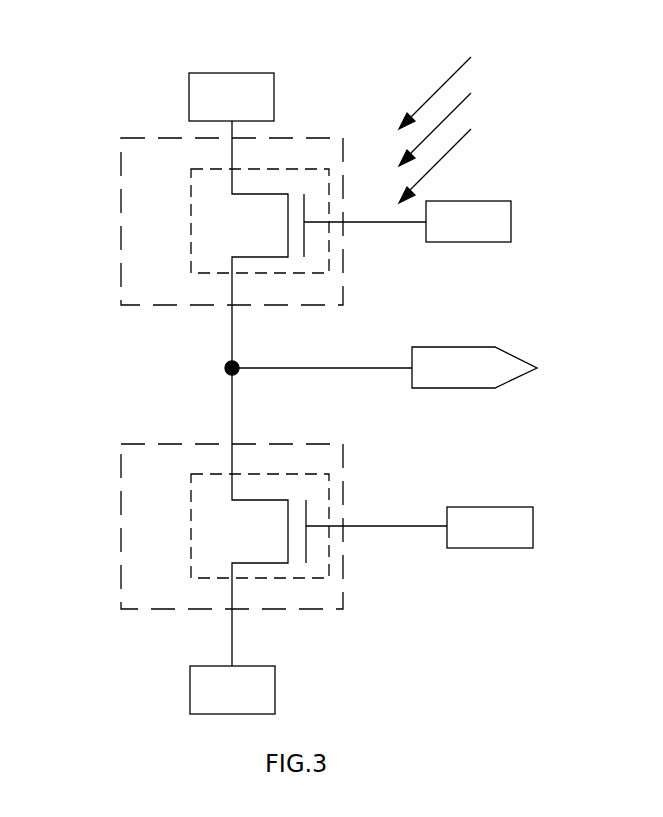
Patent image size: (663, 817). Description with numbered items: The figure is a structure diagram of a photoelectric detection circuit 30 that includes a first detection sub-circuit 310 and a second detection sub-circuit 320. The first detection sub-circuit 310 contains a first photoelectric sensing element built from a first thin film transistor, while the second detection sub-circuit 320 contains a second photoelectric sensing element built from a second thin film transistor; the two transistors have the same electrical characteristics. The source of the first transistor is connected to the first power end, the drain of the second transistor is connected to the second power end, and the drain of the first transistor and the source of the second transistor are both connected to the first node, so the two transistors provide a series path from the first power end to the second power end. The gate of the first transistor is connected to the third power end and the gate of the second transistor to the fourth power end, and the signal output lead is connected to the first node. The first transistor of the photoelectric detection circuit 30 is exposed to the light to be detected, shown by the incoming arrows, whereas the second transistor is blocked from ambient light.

The photoelectric detection circuit 30 is at (285, 374).
The first detection sub-circuit 310 is at (272, 221).
The second detection sub-circuit 320 is at (283, 526).